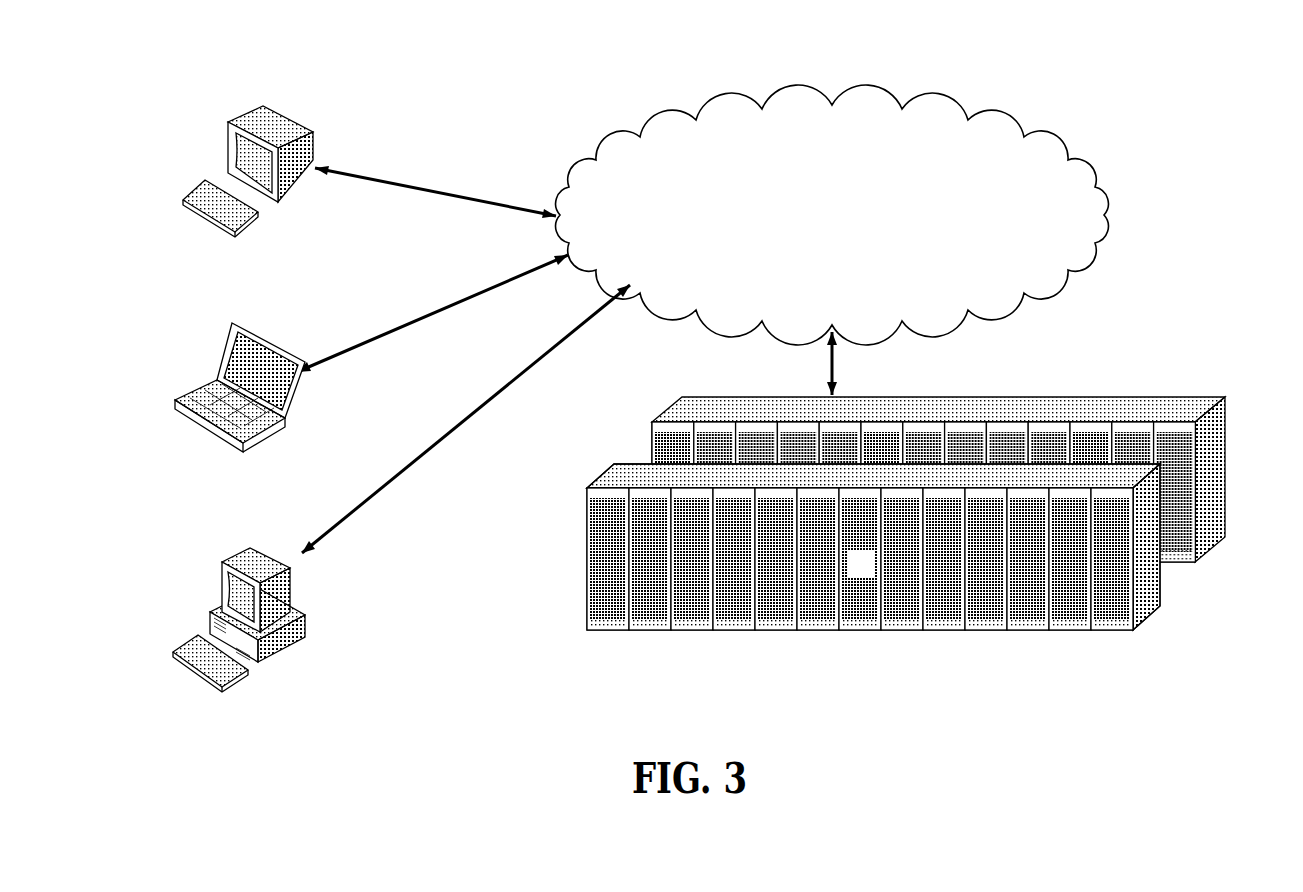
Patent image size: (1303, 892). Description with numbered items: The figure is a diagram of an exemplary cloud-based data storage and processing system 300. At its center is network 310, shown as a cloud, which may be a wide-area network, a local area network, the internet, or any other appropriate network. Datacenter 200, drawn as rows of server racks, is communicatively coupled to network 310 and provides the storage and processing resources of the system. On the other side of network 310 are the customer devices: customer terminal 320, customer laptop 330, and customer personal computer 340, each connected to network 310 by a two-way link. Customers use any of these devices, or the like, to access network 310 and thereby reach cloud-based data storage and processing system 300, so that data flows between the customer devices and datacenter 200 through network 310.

The cloud-based data storage and processing system 300 is at (1170, 140).
The network 310 is at (832, 215).
The customer terminal 320 is at (227, 142).
The customer laptop 330 is at (215, 380).
The customer personal computer 340 is at (222, 572).
The datacenter 200 is at (1145, 598).